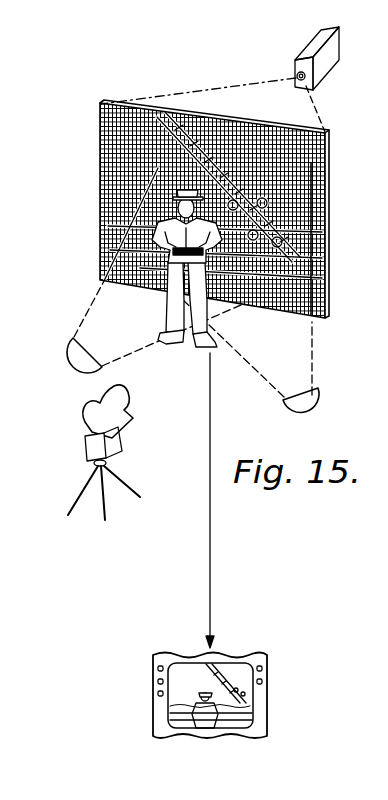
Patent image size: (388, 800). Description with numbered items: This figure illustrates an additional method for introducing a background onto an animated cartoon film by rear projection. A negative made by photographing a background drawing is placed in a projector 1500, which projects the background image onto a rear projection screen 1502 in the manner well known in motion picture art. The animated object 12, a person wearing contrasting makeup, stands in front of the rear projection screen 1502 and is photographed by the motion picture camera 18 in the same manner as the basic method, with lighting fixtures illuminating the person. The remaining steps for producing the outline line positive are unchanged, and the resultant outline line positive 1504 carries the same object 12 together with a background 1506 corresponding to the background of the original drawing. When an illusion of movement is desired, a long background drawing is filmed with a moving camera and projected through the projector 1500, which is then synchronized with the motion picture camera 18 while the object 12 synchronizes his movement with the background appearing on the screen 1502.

The projector 1500 is at (312, 43).
The rear projection screen 1502 is at (118, 136).
The animated object 12 is at (177, 307).
The motion picture camera 18 is at (118, 438).
The outline line positive 1504 is at (262, 697).
The background 1506 is at (219, 682).